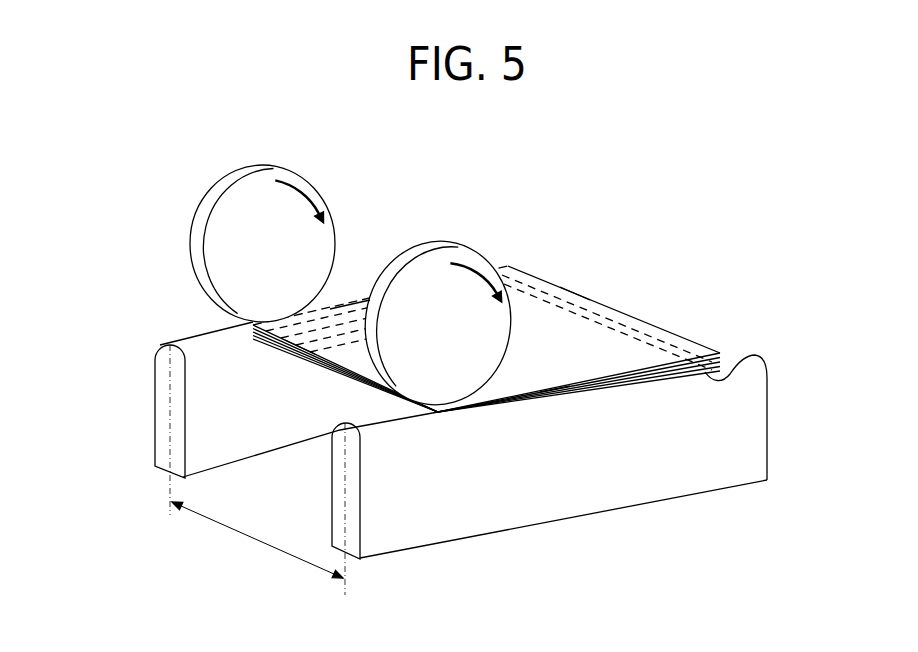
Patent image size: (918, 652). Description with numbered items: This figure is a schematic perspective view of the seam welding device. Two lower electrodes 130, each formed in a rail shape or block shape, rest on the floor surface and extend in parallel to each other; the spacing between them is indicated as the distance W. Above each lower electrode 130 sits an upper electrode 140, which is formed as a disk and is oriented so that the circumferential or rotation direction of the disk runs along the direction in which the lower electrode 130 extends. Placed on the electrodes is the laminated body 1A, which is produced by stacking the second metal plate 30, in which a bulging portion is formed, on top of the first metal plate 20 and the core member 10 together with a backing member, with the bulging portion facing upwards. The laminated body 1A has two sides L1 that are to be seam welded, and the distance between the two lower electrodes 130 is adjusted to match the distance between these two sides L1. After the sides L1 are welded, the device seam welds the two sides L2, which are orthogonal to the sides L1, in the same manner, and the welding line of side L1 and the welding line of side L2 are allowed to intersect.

The laminated body 1A is at (609, 296).
The core member 10 is at (663, 327).
The first metal plate 20 is at (733, 376).
The second metal plate 30 is at (623, 310).
The lower electrode 130 is at (155, 452).
The upper electrode 140 is at (238, 178).
The side L1 is at (347, 293).
The side L2 is at (307, 346).
The width between guide members W is at (257, 470).